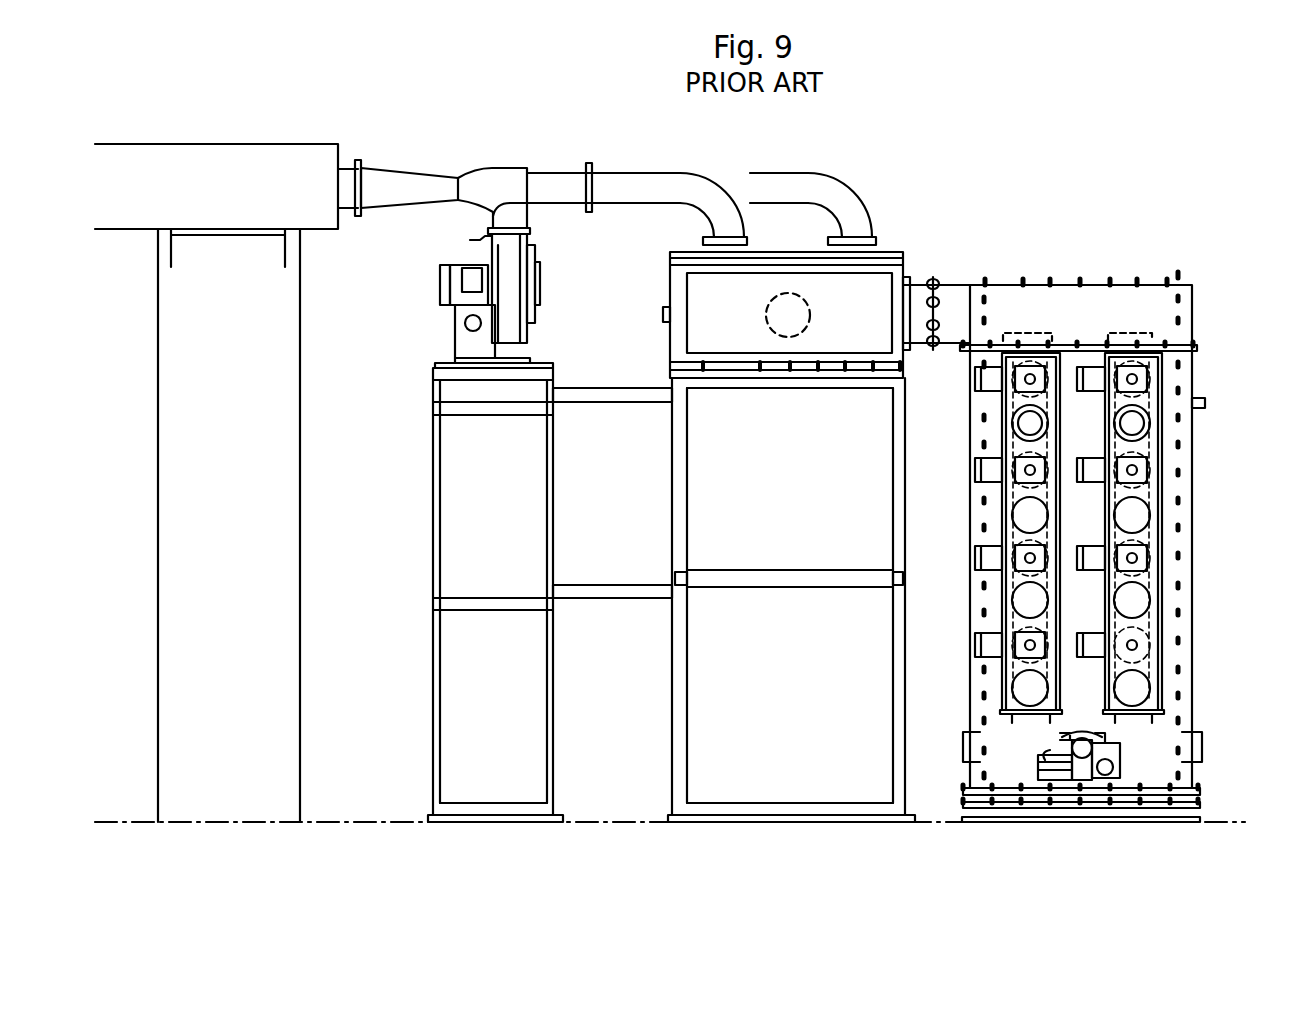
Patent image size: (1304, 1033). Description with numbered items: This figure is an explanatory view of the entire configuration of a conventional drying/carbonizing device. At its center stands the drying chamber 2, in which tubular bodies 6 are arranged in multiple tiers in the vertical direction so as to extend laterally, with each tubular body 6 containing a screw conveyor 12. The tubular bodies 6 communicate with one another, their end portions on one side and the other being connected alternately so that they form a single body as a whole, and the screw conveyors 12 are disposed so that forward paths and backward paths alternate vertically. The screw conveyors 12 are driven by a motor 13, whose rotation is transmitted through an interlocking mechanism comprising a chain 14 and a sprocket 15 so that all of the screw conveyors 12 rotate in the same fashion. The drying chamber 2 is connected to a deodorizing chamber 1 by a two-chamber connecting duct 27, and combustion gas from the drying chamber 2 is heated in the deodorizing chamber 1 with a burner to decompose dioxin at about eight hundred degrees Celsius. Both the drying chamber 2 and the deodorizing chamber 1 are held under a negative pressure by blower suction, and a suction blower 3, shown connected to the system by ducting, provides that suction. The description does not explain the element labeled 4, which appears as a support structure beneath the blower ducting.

The deodorizing chamber 1 is at (835, 455).
The drying chamber 2 is at (1124, 544).
The suction blower 3 is at (252, 162).
The blower tower 4 is at (490, 612).
The tubular body 6 is at (1150, 420).
The screw conveyor 12 is at (1140, 374).
The motor 13 is at (1063, 783).
The chain 14 is at (1100, 732).
The sprocket 15 is at (1138, 686).
The two-chamber connecting duct 27 is at (948, 307).